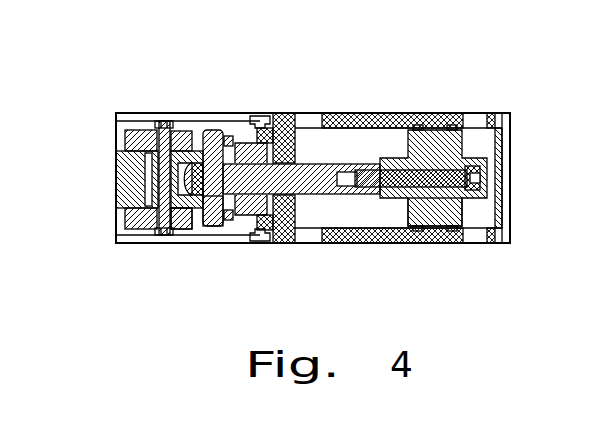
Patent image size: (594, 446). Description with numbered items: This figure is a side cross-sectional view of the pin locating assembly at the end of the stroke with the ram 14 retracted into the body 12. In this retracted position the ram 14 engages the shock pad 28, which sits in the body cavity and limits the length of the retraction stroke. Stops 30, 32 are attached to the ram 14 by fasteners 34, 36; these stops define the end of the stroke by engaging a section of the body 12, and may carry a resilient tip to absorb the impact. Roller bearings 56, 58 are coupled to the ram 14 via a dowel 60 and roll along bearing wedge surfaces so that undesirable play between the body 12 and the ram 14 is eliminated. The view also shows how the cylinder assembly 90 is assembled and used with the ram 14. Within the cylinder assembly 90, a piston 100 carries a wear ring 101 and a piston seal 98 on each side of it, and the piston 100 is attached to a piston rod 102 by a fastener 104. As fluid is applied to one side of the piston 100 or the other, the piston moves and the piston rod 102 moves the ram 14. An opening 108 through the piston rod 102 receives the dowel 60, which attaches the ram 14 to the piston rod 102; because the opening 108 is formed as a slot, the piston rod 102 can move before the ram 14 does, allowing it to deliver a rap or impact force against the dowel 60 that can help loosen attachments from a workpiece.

The body 12 is at (497, 243).
The ram 14 is at (252, 120).
The shock pad 28 is at (285, 118).
The stop 30 is at (141, 140).
The stop 32 is at (150, 222).
The fastener 34 is at (163, 120).
The fastener 36 is at (166, 235).
The bearing 56 is at (196, 130).
The bearing 58 is at (197, 228).
The dowel 60 is at (217, 216).
The cylinder assembly 90 is at (435, 106).
The piston seal 98 is at (418, 231).
The piston 100 is at (438, 228).
The wear ring 101 is at (445, 128).
The piston rod 102 is at (303, 185).
The fastener 104 is at (377, 199).
The opening 108 is at (232, 128).